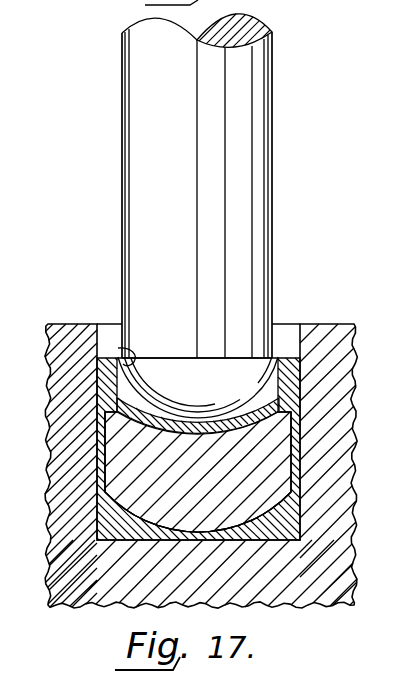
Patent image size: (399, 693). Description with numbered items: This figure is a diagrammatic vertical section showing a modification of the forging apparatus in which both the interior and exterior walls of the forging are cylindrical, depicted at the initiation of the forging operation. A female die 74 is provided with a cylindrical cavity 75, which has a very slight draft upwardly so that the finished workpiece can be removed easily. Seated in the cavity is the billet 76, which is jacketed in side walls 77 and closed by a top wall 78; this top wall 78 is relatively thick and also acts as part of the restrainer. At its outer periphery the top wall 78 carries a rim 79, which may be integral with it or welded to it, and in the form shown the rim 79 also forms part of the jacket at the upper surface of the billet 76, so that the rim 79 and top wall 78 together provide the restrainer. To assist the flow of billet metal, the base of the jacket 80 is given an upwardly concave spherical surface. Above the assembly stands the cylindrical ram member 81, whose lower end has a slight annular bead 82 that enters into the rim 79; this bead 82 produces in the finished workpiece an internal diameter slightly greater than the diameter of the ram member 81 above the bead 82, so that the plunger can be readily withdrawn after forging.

The female die 74 is at (303, 349).
The cylindrical cavity 75 is at (300, 348).
The billet 76 is at (280, 472).
The side walls 77 is at (103, 478).
The top wall 78 is at (272, 432).
The rim 79 is at (278, 384).
The base of the jacket 80 is at (277, 520).
The ram member 81 is at (258, 274).
The annular bead 82 is at (118, 348).